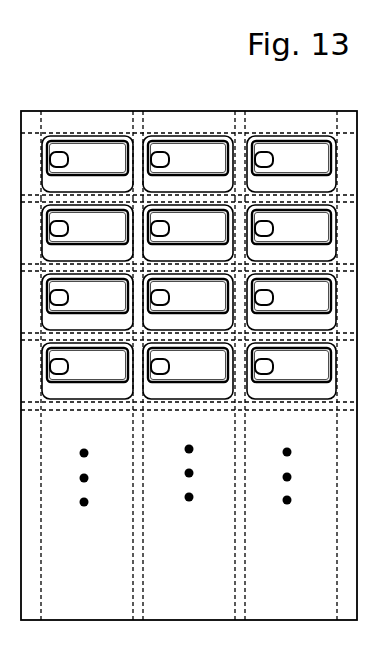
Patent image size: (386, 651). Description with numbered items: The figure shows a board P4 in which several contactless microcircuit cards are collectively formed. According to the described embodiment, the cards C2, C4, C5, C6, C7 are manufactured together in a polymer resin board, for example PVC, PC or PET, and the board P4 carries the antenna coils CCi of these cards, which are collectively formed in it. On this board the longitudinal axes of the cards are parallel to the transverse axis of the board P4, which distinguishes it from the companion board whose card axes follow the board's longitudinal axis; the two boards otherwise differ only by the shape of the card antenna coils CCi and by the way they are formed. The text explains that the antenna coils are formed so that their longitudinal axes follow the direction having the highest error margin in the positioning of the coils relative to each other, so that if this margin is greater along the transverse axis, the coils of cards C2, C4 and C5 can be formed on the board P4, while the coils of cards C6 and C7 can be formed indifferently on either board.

The board P4 is at (21, 111).
The card C2 is at (165, 133).
The card C4 is at (189, 232).
The card C5 is at (189, 301).
The card C6 is at (189, 371).
The card C7 is at (189, 513).
The antenna coil CCi is at (260, 138).